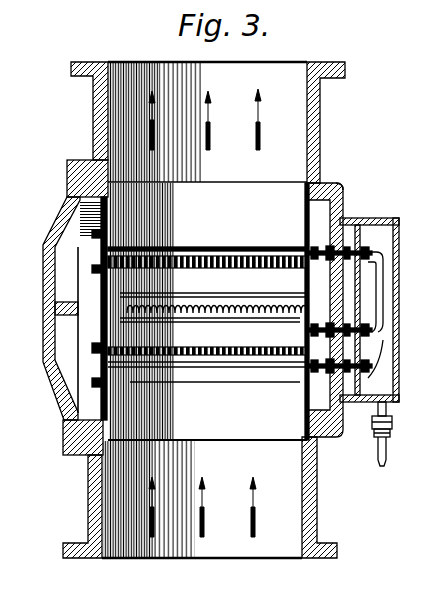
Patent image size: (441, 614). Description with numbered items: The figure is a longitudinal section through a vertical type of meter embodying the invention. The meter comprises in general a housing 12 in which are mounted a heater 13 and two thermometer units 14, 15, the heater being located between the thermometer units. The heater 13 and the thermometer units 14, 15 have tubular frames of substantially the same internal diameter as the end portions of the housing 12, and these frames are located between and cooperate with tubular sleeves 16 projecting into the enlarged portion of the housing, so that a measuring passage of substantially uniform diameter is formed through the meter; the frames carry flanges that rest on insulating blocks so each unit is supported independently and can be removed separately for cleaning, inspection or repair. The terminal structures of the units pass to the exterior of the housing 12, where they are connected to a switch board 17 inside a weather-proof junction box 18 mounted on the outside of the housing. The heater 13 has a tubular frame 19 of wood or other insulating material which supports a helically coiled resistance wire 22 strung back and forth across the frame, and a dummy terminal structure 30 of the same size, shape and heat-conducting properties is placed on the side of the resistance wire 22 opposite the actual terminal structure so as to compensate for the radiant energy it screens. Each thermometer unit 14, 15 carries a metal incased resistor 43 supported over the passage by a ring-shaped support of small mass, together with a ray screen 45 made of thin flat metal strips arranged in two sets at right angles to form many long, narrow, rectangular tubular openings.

The housing 12 is at (321, 108).
The heater 13 is at (397, 300).
The thermometer unit 14 is at (303, 380).
The thermometer unit 15 is at (300, 243).
The tubular sleeves 16 is at (112, 213).
The switch board 17 is at (371, 289).
The junction box 18 is at (398, 243).
The tubular frame 19 is at (406, 434).
The resistance wire 22 is at (217, 328).
The dummy terminal structure 30 is at (214, 318).
The metal incased resistor 43 is at (225, 252).
The ray screen 45 is at (196, 270).